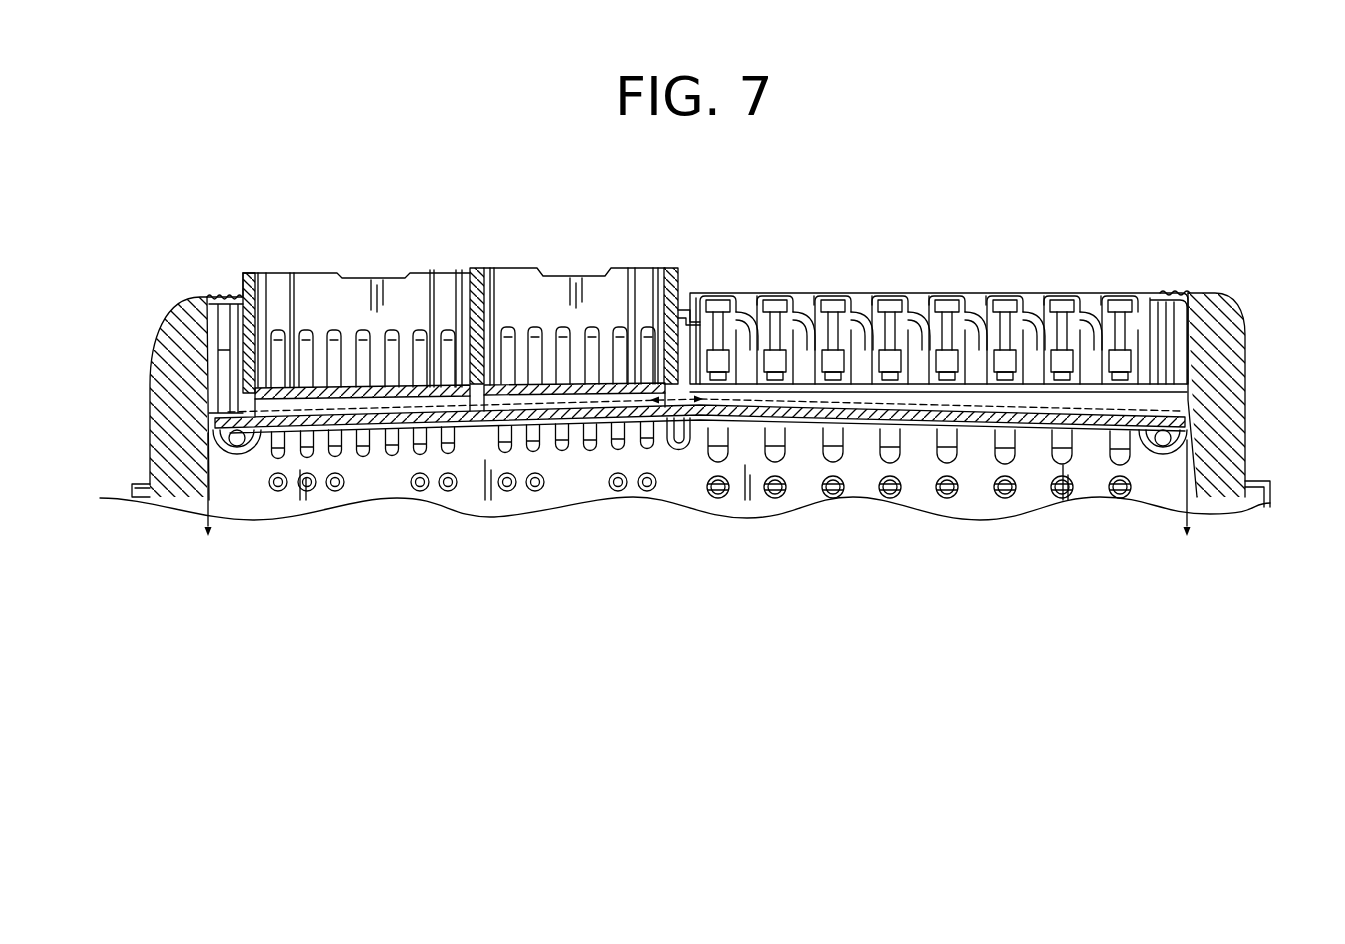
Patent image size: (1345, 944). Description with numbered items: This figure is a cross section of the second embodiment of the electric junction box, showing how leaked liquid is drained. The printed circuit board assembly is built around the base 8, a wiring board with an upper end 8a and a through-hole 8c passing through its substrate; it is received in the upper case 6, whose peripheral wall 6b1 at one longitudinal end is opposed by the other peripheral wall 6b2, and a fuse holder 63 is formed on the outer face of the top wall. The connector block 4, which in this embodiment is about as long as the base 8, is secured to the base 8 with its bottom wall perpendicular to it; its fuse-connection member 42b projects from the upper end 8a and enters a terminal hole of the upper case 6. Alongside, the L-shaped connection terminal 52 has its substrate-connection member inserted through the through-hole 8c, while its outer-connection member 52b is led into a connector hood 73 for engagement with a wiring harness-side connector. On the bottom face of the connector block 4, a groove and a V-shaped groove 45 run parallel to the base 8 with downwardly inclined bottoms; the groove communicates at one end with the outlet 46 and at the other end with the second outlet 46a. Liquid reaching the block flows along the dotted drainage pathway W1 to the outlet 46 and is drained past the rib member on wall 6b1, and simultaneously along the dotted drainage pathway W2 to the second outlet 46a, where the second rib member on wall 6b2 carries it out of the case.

The connection terminal 52 is at (305, 316).
The outer-connection member 52b is at (312, 362).
The connector hood 73 is at (573, 270).
The drainage pathway W2 is at (613, 367).
The drainage pathway W1 is at (847, 400).
The fuse holder 63 is at (1060, 313).
The fuse-connection member 42b is at (1120, 317).
The connector block 4 is at (1195, 345).
The outlet 46 is at (1250, 345).
The second outlet 46a is at (170, 398).
The upper case 6 is at (698, 386).
The peripheral wall 6b1 is at (1213, 382).
The peripheral wall 6b2 is at (168, 400).
The base 8 is at (1182, 487).
The upper end 8a is at (1180, 460).
The through-hole 8c is at (132, 492).
The V-shaped groove 45 is at (438, 400).